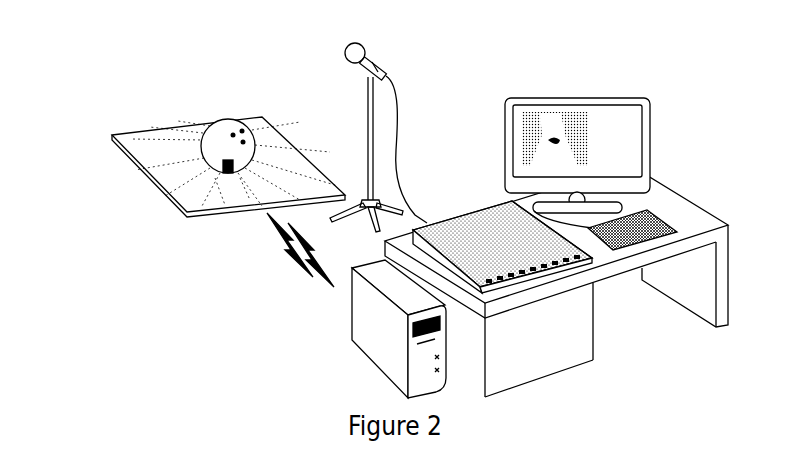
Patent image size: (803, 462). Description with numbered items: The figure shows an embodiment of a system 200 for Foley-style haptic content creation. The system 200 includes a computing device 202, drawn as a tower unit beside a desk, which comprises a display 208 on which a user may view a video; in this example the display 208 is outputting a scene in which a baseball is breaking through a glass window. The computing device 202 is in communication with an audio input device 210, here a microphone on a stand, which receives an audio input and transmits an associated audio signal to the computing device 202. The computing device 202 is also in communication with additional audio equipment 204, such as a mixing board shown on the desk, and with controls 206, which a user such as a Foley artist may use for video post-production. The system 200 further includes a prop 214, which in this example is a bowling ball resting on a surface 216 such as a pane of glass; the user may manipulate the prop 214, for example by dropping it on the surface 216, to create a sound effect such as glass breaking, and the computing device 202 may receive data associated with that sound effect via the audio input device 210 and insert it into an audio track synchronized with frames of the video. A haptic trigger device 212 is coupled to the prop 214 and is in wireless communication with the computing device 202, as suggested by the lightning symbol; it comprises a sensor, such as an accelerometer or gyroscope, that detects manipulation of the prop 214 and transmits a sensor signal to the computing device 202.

The system 200 is at (87, 58).
The computing device 202 is at (370, 346).
The additional audio equipment 204 is at (455, 203).
The controls 206 is at (670, 203).
The display 208 is at (632, 106).
The audio input device 210 is at (377, 41).
The haptic trigger device 212 is at (226, 184).
The prop 214 is at (227, 110).
The surface 216 is at (126, 169).